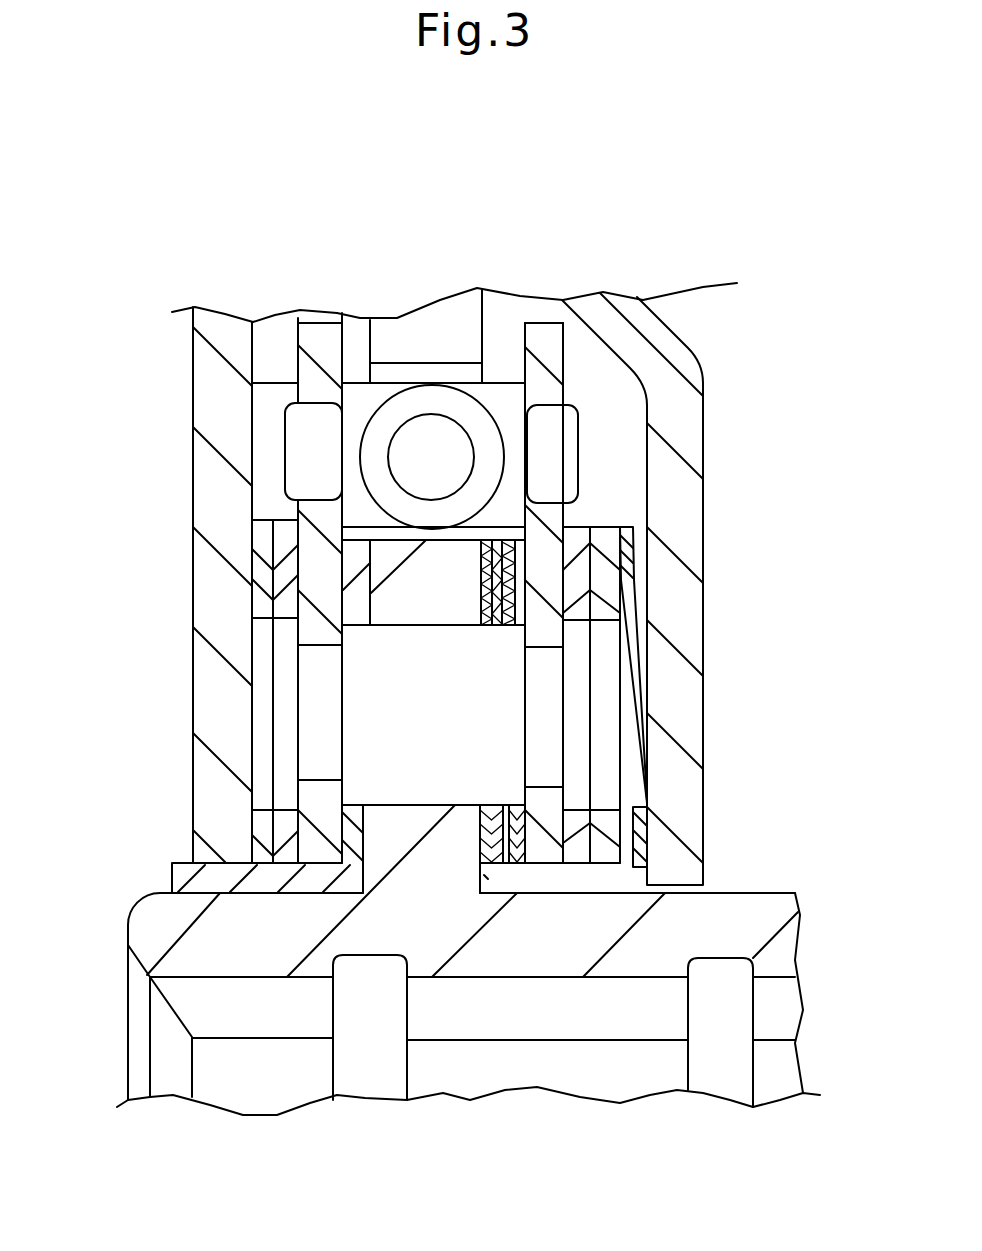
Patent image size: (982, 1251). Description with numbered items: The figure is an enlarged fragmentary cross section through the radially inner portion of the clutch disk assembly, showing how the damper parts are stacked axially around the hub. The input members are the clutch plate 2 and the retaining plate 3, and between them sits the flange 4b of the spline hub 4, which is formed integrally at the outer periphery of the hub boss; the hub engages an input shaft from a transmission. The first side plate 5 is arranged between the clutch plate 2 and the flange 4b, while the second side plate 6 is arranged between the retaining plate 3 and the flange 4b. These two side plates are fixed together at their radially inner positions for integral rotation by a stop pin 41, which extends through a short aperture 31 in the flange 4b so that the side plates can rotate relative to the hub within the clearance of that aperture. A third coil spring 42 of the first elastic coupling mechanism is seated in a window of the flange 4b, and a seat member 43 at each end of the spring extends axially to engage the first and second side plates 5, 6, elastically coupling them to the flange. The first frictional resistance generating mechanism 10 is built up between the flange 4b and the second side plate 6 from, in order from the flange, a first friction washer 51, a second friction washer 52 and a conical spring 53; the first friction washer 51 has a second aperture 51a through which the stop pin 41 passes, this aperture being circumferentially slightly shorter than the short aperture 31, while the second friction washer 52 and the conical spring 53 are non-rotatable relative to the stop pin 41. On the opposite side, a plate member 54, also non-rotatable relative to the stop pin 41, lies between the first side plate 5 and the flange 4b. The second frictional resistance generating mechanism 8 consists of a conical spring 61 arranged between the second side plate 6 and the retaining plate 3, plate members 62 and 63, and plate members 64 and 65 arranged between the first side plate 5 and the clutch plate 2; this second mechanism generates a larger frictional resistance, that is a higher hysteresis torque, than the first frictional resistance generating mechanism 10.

The clutch plate 2 is at (223, 515).
The retaining plate 3 is at (678, 589).
The spline hub 4 is at (760, 873).
The flange 4b is at (432, 362).
The first side plate 5 is at (303, 380).
The second side plate 6 is at (669, 393).
The second frictional resistance generating mechanism 8 is at (727, 605).
The first frictional resistance generating mechanism 10 is at (460, 1026).
The short aperture 31 is at (606, 761).
The stop pin 41 is at (310, 576).
The third coil spring 42 is at (440, 423).
The seat member 43 is at (331, 360).
The first friction washer 51 is at (460, 1012).
The second aperture 51a is at (543, 422).
The second friction washer 52 is at (517, 991).
The conical spring 53 is at (573, 991).
The plate member 54 is at (292, 991).
The conical spring 61 is at (707, 652).
The plate member 62 is at (693, 627).
The plate member 63 is at (678, 606).
The plate member 64 is at (193, 622).
The plate member 65 is at (194, 649).